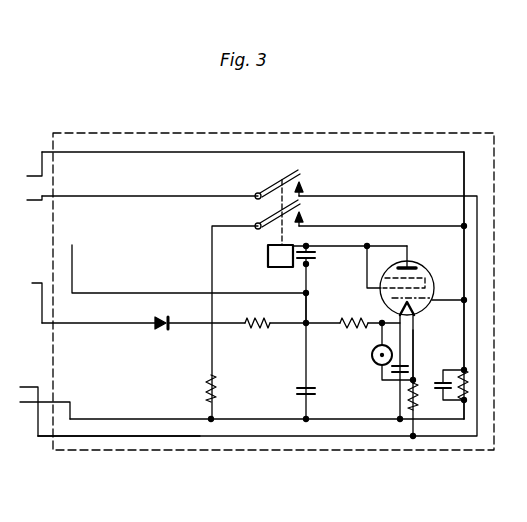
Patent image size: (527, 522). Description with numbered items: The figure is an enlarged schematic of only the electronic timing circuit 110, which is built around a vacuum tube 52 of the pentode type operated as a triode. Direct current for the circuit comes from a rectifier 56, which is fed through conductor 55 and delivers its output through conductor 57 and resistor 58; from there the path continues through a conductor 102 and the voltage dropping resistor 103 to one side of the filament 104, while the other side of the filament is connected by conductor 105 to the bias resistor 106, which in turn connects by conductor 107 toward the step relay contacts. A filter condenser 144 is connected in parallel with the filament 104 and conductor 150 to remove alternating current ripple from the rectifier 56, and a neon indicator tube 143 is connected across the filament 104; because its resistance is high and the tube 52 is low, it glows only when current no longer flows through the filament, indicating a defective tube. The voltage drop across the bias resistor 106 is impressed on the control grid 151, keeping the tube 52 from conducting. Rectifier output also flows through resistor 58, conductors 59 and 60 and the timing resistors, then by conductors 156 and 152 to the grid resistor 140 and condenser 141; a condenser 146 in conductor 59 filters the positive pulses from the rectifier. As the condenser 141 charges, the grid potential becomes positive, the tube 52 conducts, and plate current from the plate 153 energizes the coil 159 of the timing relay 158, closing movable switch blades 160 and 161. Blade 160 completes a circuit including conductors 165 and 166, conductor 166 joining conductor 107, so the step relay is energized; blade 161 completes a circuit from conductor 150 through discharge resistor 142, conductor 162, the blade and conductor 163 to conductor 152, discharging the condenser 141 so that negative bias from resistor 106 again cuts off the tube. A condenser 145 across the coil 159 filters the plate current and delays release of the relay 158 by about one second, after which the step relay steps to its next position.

The timing circuit 110 is at (211, 130).
The conductor 156 is at (116, 151).
The conductor 165 is at (155, 195).
The movable switch blade 160 is at (266, 186).
The movable switch blade 161 is at (266, 216).
The timing relay 158 is at (275, 172).
The conductor 166 is at (352, 195).
The conductor 163 is at (408, 225).
The conductor 162 is at (211, 245).
The coil 159 is at (267, 250).
The condenser 145 is at (316, 256).
The vacuum tube 52 is at (388, 258).
The anode 153 is at (411, 266).
The filament 104 is at (416, 306).
The conductor 105 is at (428, 345).
The conductor 152 is at (466, 242).
The control grid 151 is at (448, 296).
The conductor 60 is at (100, 292).
The conductor 59 is at (305, 307).
The conductor 55 is at (87, 324).
The rectifier 56 is at (161, 330).
The conductor 57 is at (180, 322).
The resistor 58 is at (277, 340).
The conductor 102 is at (326, 325).
The voltage dropping resistor 103 is at (350, 320).
The neon indicator tube 143 is at (372, 360).
The filter condenser 144 is at (384, 376).
The discharge resistor 142 is at (207, 380).
The condenser 146 is at (296, 392).
The conductor 150 is at (90, 420).
The conductor 107 is at (155, 437).
The bias resistor 106 is at (410, 410).
The resistor 140 is at (468, 402).
The condenser 141 is at (437, 388).